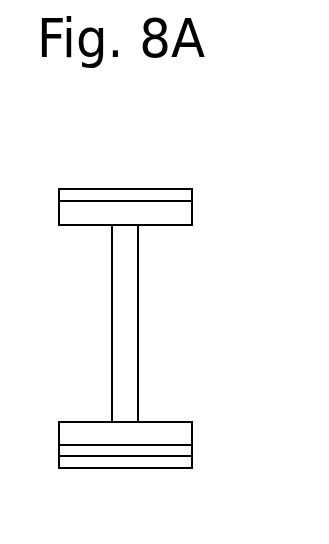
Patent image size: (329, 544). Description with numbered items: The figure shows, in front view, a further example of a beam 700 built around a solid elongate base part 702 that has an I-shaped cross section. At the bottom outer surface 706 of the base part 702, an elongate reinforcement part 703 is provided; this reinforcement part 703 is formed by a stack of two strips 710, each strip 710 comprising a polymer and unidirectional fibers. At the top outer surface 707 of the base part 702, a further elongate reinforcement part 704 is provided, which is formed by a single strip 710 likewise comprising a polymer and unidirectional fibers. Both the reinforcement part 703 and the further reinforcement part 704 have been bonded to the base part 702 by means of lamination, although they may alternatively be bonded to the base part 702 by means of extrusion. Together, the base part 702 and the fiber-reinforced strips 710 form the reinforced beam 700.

The beam 700 is at (185, 173).
The solid elongate base part 702 is at (148, 322).
The elongate reinforcement part 703 is at (200, 455).
The further elongate reinforcement part 704 is at (88, 185).
The bottom outer surface 706 is at (122, 438).
The top outer surface 707 is at (153, 207).
The strip 710 is at (177, 197).